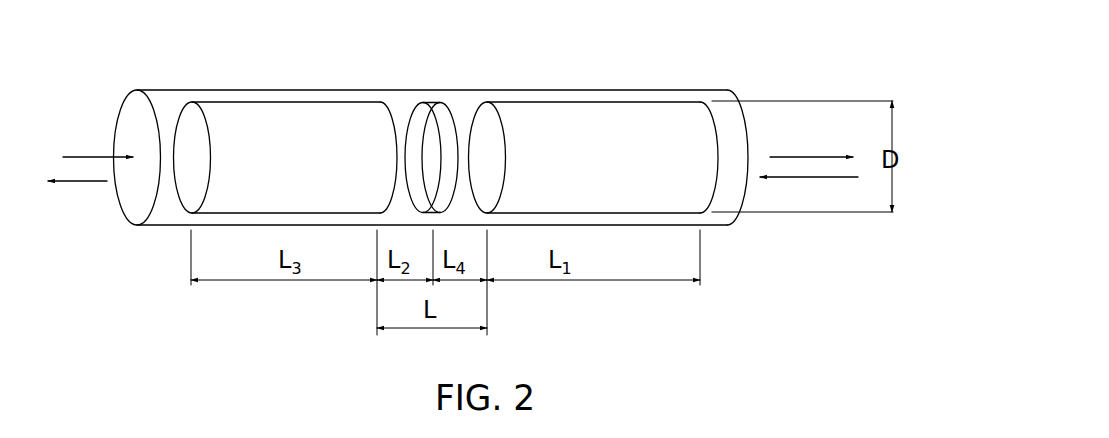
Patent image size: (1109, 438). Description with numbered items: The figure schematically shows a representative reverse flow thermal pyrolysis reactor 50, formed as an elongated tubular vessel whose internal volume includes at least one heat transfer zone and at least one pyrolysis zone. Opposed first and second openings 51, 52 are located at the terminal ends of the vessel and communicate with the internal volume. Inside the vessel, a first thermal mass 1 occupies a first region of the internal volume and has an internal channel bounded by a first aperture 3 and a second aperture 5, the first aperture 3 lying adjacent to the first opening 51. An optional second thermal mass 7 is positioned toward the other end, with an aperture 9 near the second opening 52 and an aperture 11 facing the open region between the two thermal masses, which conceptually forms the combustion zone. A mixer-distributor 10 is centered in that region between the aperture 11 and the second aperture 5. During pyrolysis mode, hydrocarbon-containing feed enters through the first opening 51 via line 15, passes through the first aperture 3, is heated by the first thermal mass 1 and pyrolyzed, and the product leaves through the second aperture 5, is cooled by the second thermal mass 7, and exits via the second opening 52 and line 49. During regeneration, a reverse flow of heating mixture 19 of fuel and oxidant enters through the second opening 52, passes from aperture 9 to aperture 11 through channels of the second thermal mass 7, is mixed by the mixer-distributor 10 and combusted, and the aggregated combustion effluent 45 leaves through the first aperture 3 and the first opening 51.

The first thermal mass 1 is at (610, 213).
The first aperture 3 is at (717, 180).
The second aperture 5 is at (487, 157).
The second thermal mass 7 is at (273, 214).
The aperture of second thermal mass 9 is at (192, 157).
The mixer-distributor 10 is at (425, 105).
The aperture of second thermal mass 11 is at (387, 108).
The line 15 is at (813, 177).
The heating mixture 19 is at (103, 157).
The aggregated combustion effluent 45 is at (805, 157).
The line 49 is at (77, 183).
The reactor 50 is at (697, 90).
The first opening 51 is at (747, 132).
The second opening 52 is at (128, 110).